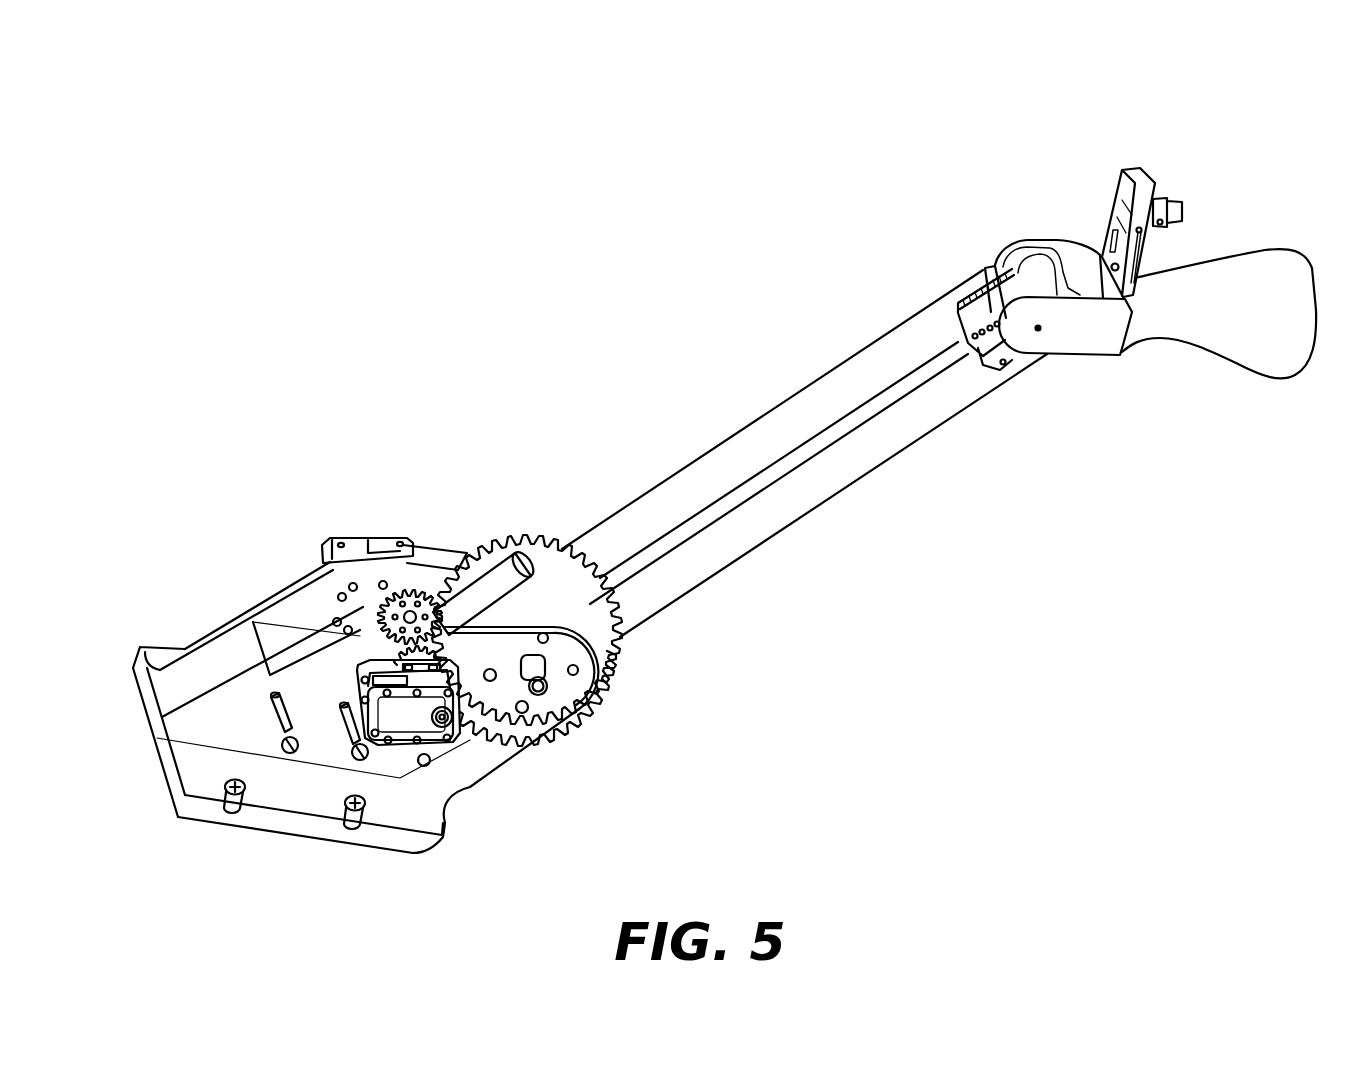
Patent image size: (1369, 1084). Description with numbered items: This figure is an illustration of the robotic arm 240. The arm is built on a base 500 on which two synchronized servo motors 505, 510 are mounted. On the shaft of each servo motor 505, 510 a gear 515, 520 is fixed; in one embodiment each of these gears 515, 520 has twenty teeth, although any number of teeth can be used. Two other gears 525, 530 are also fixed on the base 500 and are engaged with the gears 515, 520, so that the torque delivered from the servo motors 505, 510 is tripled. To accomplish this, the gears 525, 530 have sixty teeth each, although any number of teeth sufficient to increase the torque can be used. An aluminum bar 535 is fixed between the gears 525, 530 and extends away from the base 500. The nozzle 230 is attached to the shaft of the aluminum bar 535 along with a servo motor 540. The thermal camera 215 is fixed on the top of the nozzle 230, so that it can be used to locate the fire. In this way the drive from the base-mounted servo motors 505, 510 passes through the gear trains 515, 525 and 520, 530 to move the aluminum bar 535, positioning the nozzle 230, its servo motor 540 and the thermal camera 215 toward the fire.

The robotic arm 240 is at (156, 94).
The thermal camera 215 is at (1120, 190).
The servo motor 540 is at (984, 307).
The aluminum bar 535 is at (697, 473).
The servo motor 505 is at (368, 540).
The gear 515 is at (398, 575).
The gear 525 is at (528, 537).
The gear 530 is at (606, 670).
The gear 520 is at (400, 656).
The base 500 is at (212, 768).
The servo motor 510 is at (423, 715).
The nozzle 230 is at (1233, 337).